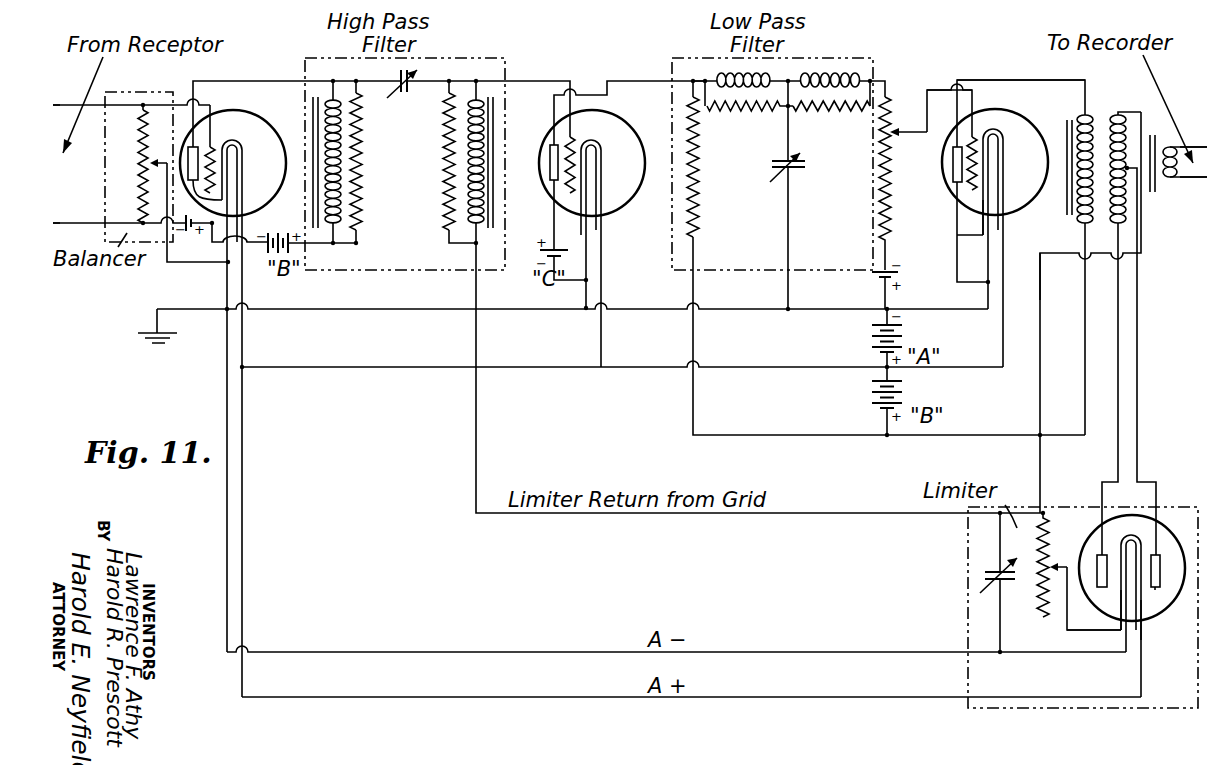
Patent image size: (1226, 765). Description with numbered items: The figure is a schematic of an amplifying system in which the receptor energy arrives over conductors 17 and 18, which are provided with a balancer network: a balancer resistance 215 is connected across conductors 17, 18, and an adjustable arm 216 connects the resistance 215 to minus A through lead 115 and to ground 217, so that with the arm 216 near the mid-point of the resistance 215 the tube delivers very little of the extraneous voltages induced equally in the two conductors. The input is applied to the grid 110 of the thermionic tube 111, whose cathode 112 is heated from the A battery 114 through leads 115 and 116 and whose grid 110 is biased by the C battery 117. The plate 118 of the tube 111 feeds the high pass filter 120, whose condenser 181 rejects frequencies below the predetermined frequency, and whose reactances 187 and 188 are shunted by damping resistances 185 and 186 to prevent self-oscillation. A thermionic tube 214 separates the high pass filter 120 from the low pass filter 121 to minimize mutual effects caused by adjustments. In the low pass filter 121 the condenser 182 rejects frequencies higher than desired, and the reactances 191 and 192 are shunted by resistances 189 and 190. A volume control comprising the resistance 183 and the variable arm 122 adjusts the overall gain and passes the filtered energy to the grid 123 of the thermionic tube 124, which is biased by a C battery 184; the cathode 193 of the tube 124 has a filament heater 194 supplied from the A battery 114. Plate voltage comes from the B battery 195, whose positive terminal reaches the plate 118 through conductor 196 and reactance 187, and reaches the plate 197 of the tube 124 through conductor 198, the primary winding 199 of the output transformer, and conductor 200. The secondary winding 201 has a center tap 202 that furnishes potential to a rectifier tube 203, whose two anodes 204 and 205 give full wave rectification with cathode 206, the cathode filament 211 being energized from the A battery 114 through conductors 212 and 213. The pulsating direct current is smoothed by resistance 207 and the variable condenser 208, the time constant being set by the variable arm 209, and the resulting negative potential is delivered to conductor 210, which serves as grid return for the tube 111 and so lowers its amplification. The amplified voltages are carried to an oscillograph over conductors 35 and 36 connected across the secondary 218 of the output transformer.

The conductor 17 is at (56, 106).
The conductor 18 is at (56, 225).
The conductor 35 is at (1192, 147).
The conductor 36 is at (1196, 179).
The grid 110 is at (213, 144).
The thermionic tube 111 is at (255, 119).
The cathode 112 is at (216, 181).
The A battery 114 is at (903, 338).
The lead 115 is at (350, 311).
The lead 116 is at (338, 354).
The C battery 117 is at (186, 240).
The plate 118 is at (223, 200).
The high pass filter 120 is at (482, 59).
The low pass filter 121 is at (848, 61).
The variable arm 122 is at (942, 89).
The grid 123 is at (977, 138).
The thermionic tube 124 is at (1028, 119).
The condenser 181 is at (409, 93).
The condenser 182 is at (808, 166).
The resistance 183 is at (891, 173).
The C battery 184 is at (899, 276).
The resistance 185 is at (362, 208).
The resistance 186 is at (446, 166).
The reactance 187 is at (341, 168).
The reactance 188 is at (486, 205).
The resistance 189 is at (745, 109).
The resistance 190 is at (830, 109).
The reactance 191 is at (720, 76).
The reactance 192 is at (865, 82).
The cathode 193 is at (984, 212).
The filament heater 194 is at (1003, 180).
The B battery 195 is at (903, 395).
The conductor 196 is at (740, 435).
The plate 197 is at (953, 184).
The conductor 198 is at (952, 435).
The primary winding 199 is at (1083, 219).
The conductor 200 is at (1027, 80).
The secondary winding 201 is at (1115, 114).
The center tap 202 is at (1064, 257).
The rectifier tube 203 is at (1158, 531).
The anode 204 is at (1099, 554).
The anode 205 is at (1160, 586).
The cathode 206 is at (1120, 601).
The resistance 207 is at (1047, 617).
The variable condenser 208 is at (1007, 582).
The variable arm 209 is at (1092, 652).
The conductor 210 is at (835, 514).
The filament 211 is at (1141, 616).
The conductor 212 is at (760, 652).
The conductor 213 is at (760, 698).
The thermionic tube 214 is at (627, 123).
The balancer resistance 215 is at (139, 167).
The adjustable arm 216 is at (184, 268).
The ground 217 is at (158, 345).
The secondary 218 is at (1168, 179).